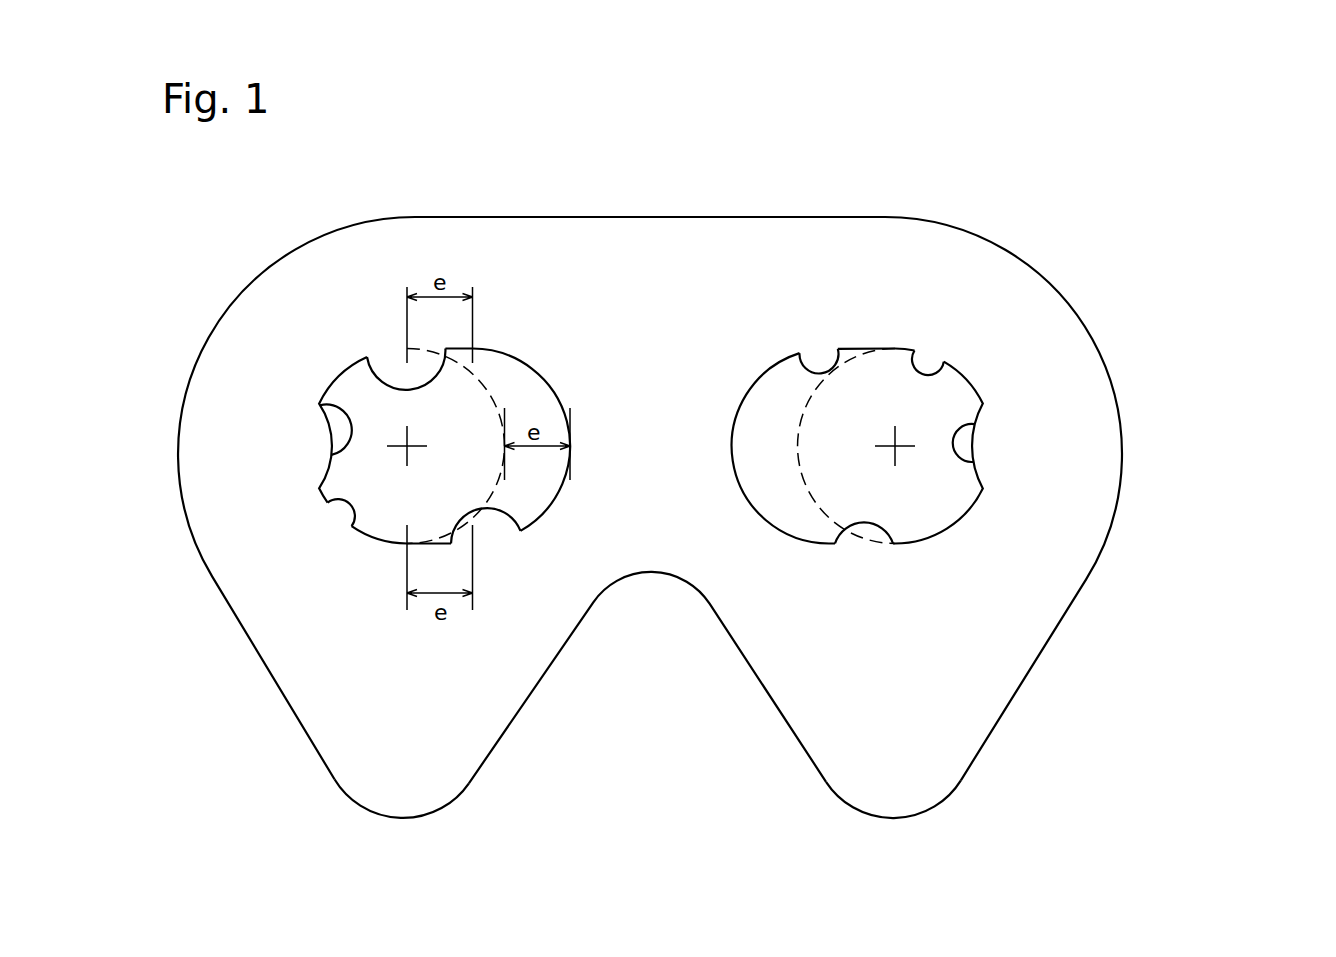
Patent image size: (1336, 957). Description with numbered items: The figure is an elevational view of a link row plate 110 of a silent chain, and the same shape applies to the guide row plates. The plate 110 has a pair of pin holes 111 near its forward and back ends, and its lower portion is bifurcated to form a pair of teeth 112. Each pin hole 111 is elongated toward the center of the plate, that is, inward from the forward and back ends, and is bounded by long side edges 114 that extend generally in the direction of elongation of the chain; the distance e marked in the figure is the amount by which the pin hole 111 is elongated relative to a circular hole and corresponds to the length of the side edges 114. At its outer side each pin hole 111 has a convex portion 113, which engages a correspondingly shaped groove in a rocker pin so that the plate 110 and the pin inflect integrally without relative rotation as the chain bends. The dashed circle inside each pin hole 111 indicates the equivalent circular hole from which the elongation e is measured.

The link row plate 110 is at (920, 142).
The pin hole 111 is at (333, 503).
The tooth 112 is at (400, 768).
The convex portion 113 is at (320, 404).
The long side edge 114 is at (404, 390).